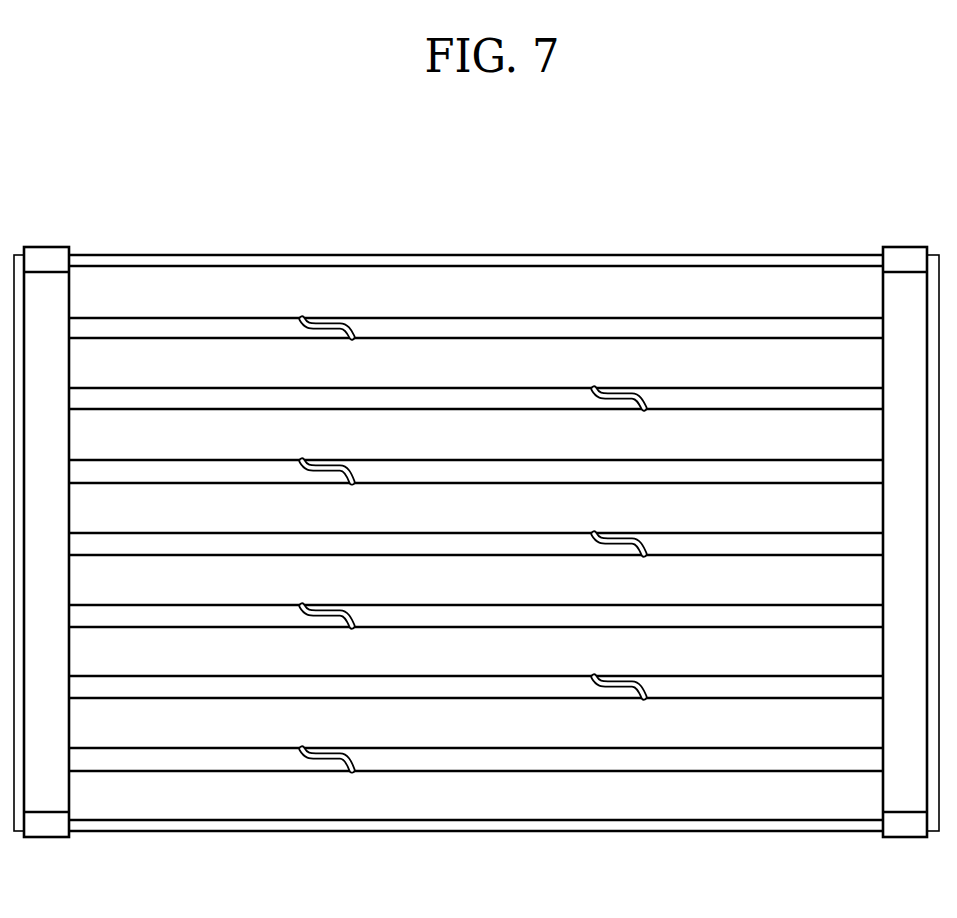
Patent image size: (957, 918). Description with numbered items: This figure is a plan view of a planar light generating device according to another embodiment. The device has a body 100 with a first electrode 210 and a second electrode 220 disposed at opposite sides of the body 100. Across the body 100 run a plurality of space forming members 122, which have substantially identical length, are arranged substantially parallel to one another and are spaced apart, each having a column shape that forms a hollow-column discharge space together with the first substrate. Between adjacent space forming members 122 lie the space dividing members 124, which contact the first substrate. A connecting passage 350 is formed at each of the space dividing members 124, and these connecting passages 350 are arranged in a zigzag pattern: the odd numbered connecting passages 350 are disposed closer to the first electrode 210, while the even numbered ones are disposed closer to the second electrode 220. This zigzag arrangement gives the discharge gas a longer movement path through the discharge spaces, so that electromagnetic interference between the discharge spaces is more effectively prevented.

The body 100 is at (682, 827).
The space forming members 122 is at (433, 790).
The space dividing members 124 is at (540, 755).
The first electrode 210 is at (45, 802).
The second electrode 220 is at (905, 802).
The connecting passages 350 is at (323, 760).